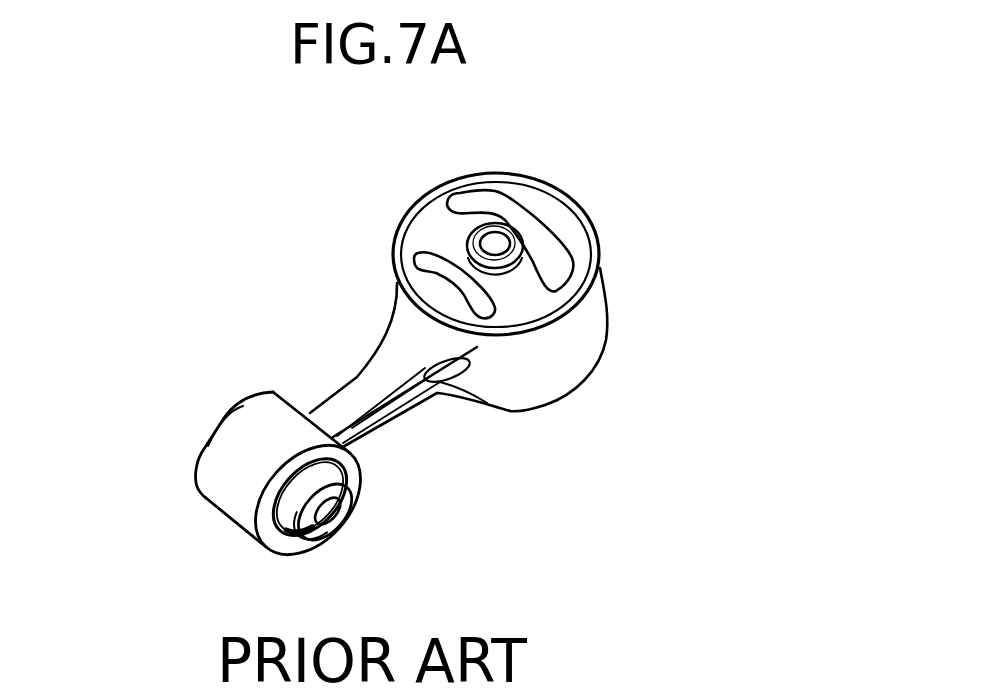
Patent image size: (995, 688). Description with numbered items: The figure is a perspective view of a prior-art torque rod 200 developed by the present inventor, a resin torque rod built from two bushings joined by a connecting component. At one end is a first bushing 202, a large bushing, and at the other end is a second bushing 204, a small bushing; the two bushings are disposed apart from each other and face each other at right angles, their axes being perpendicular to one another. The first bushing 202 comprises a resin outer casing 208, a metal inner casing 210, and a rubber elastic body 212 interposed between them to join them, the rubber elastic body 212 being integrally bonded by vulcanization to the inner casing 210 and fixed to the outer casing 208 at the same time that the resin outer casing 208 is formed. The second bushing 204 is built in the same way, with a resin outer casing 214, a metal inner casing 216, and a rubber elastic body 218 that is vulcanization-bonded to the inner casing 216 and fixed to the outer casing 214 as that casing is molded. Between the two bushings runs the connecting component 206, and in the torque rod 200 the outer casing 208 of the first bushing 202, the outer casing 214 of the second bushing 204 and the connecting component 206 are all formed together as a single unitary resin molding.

The torque rod 200 is at (284, 244).
The first bushing 202 is at (551, 171).
The second bushing 204 is at (200, 508).
The connecting component 206 is at (383, 433).
The outer casing 208 is at (590, 320).
The inner casing 210 is at (488, 220).
The rubber elastic body 212 is at (577, 202).
The outer casing 214 is at (233, 502).
The inner casing 216 is at (342, 518).
The rubber elastic body 218 is at (288, 532).